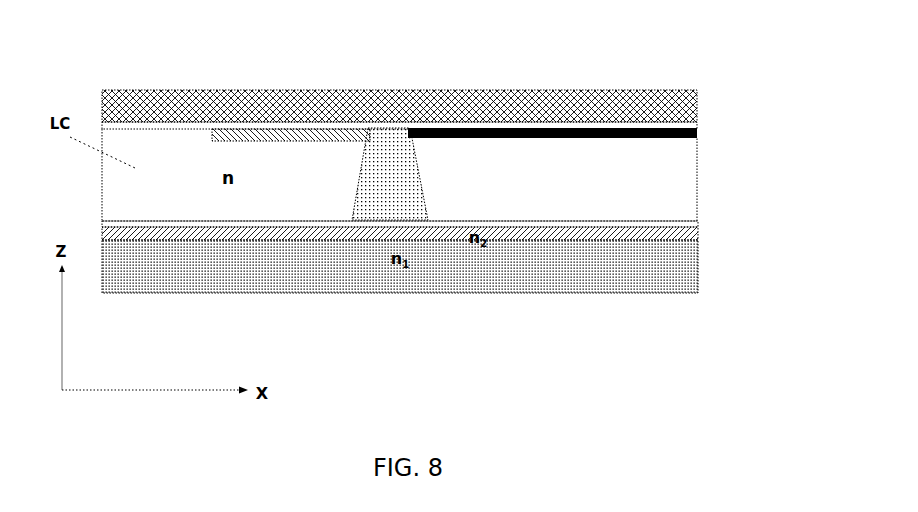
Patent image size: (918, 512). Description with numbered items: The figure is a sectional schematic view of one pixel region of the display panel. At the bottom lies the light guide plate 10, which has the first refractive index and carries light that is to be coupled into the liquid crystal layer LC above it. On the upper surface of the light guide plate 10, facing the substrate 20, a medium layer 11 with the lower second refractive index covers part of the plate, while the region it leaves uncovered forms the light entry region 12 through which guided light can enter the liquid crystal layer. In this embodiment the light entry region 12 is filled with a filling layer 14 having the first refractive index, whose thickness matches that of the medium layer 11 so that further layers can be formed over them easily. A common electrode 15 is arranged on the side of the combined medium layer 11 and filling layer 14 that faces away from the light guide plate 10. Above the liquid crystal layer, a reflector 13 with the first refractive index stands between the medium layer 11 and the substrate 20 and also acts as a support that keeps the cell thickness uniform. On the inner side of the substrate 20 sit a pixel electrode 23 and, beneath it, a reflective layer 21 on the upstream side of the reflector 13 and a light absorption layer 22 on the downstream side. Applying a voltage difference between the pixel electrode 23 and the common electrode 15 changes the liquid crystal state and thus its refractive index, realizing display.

The light guide plate 10 is at (407, 296).
The medium layer 11 is at (193, 235).
The light entry region 12 is at (350, 237).
The reflector 13 is at (422, 224).
The filling layer 14 is at (283, 240).
The common electrode 15 is at (508, 225).
The substrate 20 is at (593, 94).
The reflective layer 21 is at (331, 130).
The light absorption layer 22 is at (470, 128).
The pixel electrode 23 is at (213, 98).